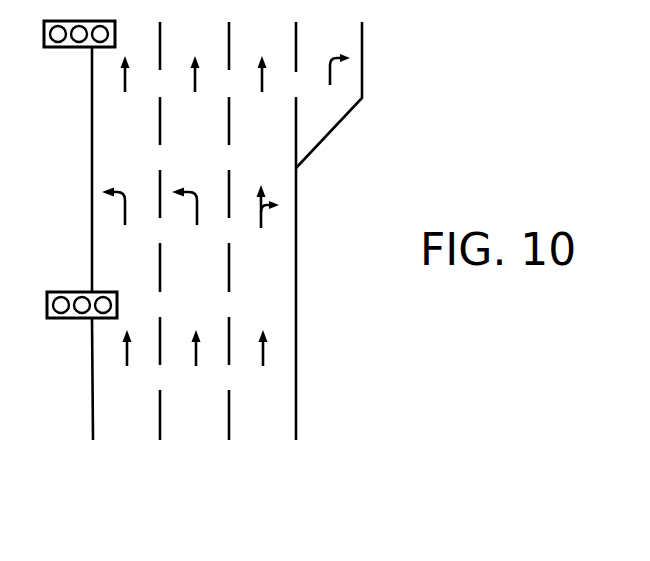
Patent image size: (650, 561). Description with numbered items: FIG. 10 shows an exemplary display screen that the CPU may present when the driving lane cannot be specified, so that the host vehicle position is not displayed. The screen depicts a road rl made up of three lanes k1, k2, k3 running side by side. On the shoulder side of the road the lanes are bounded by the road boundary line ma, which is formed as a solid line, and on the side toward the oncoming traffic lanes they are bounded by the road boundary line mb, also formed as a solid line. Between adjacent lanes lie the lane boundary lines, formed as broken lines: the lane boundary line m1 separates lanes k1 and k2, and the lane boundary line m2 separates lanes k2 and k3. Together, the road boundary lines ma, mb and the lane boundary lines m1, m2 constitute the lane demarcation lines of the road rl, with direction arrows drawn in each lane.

The road rl is at (80, 217).
The road boundary line ma is at (93, 440).
The lane k1 is at (125, 432).
The lane boundary line m1 is at (160, 440).
The lane k2 is at (195, 432).
The lane boundary line m2 is at (229, 440).
The lane k3 is at (262, 432).
The road boundary line mb is at (296, 440).